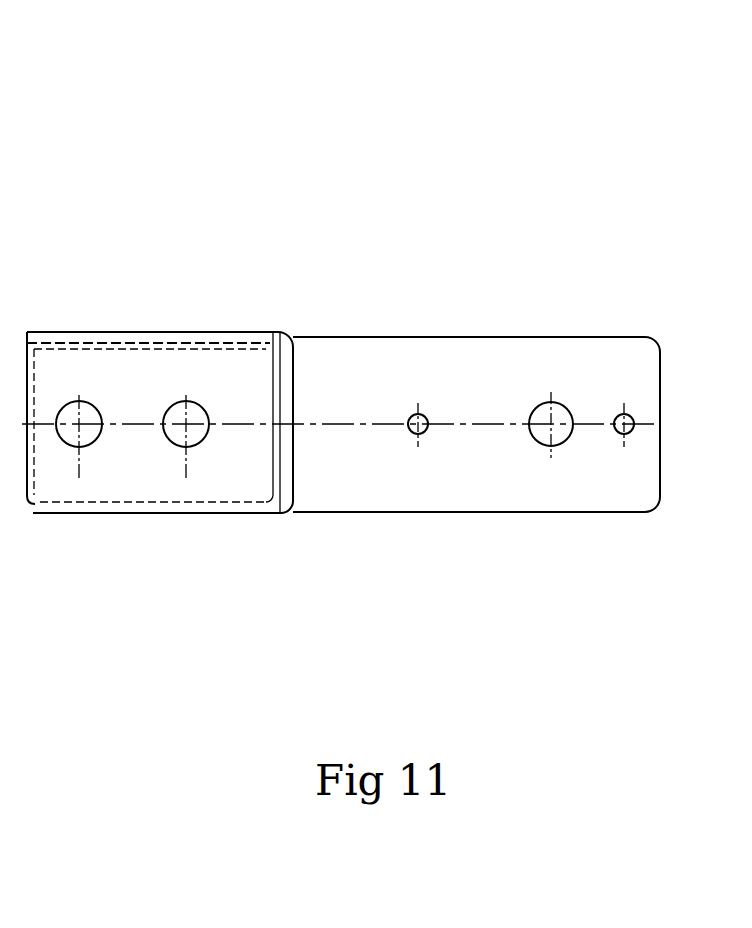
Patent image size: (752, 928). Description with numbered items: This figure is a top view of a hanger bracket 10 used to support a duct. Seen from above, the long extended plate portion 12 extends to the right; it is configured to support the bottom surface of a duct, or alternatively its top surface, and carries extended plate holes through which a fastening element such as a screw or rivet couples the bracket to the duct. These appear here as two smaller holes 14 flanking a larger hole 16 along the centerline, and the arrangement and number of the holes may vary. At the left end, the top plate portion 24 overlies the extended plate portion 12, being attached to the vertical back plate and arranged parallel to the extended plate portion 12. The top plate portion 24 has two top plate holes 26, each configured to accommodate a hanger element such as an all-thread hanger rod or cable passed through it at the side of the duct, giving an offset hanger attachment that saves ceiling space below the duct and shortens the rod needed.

The hanger bracket 10 is at (341, 263).
The extended plate portion 12 is at (497, 316).
The smaller holes 14 is at (418, 413).
The hole 16 is at (551, 403).
The top plate portion 24 is at (147, 375).
The top plate holes 26 is at (82, 430).